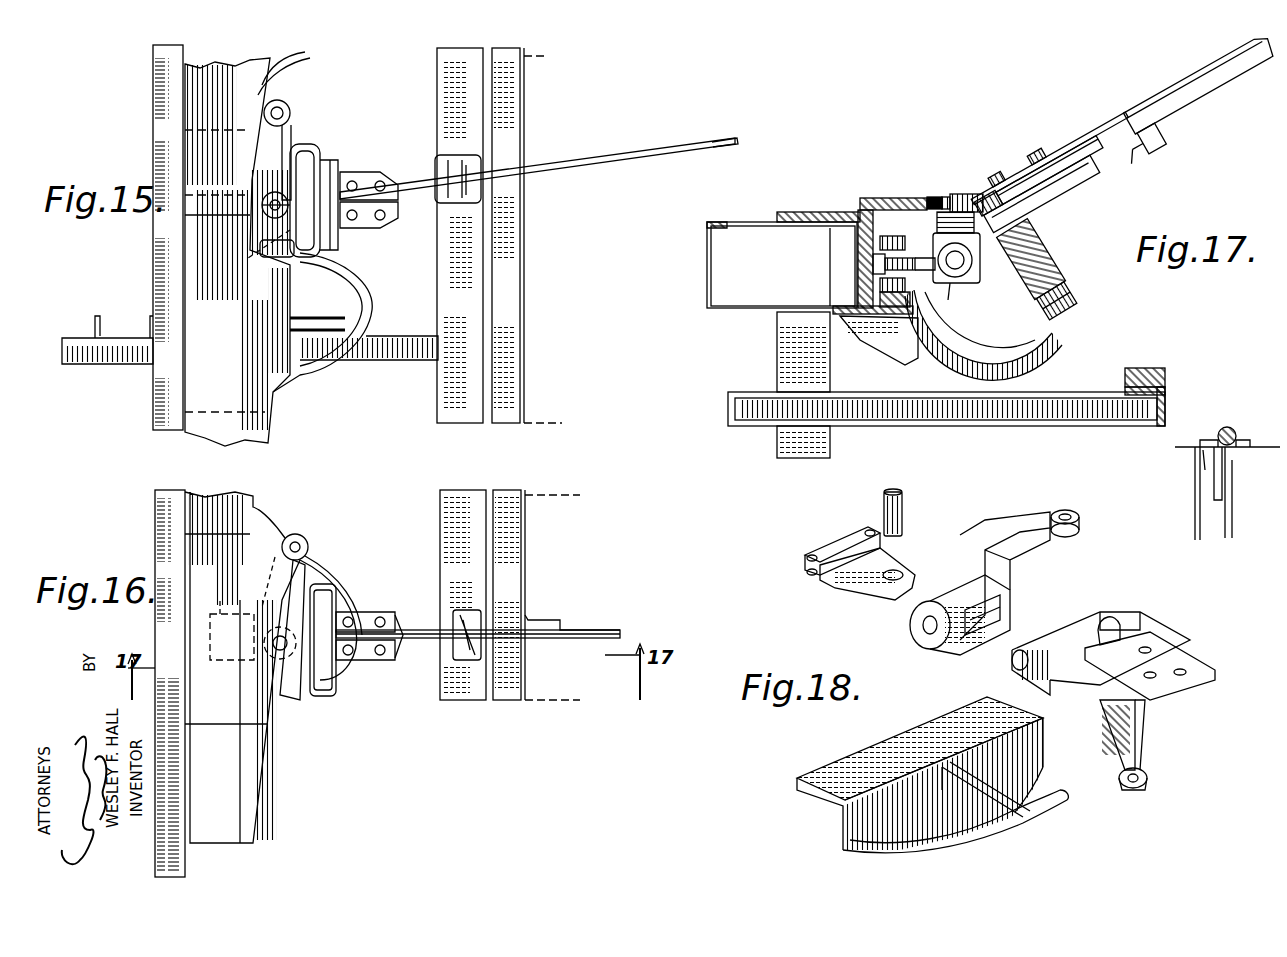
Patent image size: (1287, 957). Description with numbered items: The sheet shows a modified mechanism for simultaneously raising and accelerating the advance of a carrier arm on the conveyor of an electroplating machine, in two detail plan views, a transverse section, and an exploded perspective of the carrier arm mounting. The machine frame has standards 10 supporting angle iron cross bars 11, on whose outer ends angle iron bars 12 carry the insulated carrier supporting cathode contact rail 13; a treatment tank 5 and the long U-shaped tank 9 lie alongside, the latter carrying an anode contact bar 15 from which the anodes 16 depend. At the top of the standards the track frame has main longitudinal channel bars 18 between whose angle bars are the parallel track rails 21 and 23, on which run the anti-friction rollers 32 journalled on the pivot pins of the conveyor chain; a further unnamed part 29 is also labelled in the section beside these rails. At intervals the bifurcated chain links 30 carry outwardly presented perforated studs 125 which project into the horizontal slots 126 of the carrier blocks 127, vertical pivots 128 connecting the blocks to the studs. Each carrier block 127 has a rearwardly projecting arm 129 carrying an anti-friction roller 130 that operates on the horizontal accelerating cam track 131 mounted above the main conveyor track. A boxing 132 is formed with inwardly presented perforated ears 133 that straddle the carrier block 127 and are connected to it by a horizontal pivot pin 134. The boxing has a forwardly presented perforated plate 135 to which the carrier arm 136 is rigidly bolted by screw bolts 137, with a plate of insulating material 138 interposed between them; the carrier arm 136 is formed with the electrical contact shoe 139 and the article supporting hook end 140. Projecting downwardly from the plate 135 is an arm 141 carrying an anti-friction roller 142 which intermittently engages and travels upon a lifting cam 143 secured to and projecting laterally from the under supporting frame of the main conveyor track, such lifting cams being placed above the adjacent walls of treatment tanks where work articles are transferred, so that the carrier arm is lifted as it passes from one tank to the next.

In FIG. 15, the tank 5 is at (524, 239).
In FIG. 16, the tank 5 is at (525, 700).
In FIG. 17, the U-shaped tank 9 is at (1195, 496).
In FIG. 15, the standard 10 is at (99, 320).
In FIG. 17, the standard 10 is at (777, 356).
In FIG. 17, the angle iron cross bar 11 is at (1043, 415).
In FIG. 17, the angle iron bar 12 is at (1165, 391).
In FIG. 15, the cathode contact rail 13 is at (480, 326).
In FIG. 16, the cathode contact rail 13 is at (478, 540).
In FIG. 17, the cathode contact rail 13 is at (1143, 368).
In FIG. 17, the anode contact bar 15 is at (1232, 428).
In FIG. 17, the anode 16 is at (1228, 469).
In FIG. 15, the longitudinal channel bar 18 is at (153, 129).
In FIG. 16, the longitudinal channel bar 18 is at (170, 683).
In FIG. 17, the longitudinal channel bar 18 is at (850, 212).
In FIG. 17, the track rail 21 is at (850, 241).
In FIG. 17, the track rail 23 is at (880, 289).
In FIG. 17, the shaft 29 is at (873, 265).
In FIG. 18, the bifurcated link member 30 is at (843, 545).
In FIG. 17, the anti-friction roller 32 is at (893, 198).
In FIG. 16, the perforated stud 125 is at (229, 622).
In FIG. 17, the perforated stud 125 is at (905, 296).
In FIG. 18, the perforated stud 125 is at (880, 560).
In FIG. 18, the horizontal slot 126 is at (962, 652).
In FIG. 18, the carrier block 127 is at (912, 612).
In FIG. 15, the vertical pivot 128 is at (258, 180).
In FIG. 16, the vertical pivot 128 is at (262, 660).
In FIG. 17, the vertical pivot 128 is at (952, 283).
In FIG. 18, the vertical pivot 128 is at (900, 509).
In FIG. 15, the rearwardly projecting arm 129 is at (291, 133).
In FIG. 16, the rearwardly projecting arm 129 is at (306, 560).
In FIG. 17, the rearwardly projecting arm 129 is at (950, 215).
In FIG. 18, the rearwardly projecting arm 129 is at (1040, 548).
In FIG. 15, the anti-friction roller 130 is at (290, 110).
In FIG. 16, the anti-friction roller 130 is at (308, 540).
In FIG. 17, the anti-friction roller 130 is at (985, 192).
In FIG. 18, the anti-friction roller 130 is at (1052, 512).
In FIG. 15, the accelerating cam track 131 is at (225, 100).
In FIG. 16, the accelerating cam track 131 is at (242, 667).
In FIG. 17, the accelerating cam track 131 is at (936, 197).
In FIG. 15, the boxing 132 is at (318, 157).
In FIG. 16, the boxing 132 is at (323, 640).
In FIG. 18, the boxing 132 is at (1160, 640).
In FIG. 15, the perforated ear 133 is at (326, 256).
In FIG. 18, the perforated ear 133 is at (1098, 624).
In FIG. 17, the horizontal pivot pin 134 is at (958, 264).
In FIG. 17, the perforated plate 135 is at (1036, 208).
In FIG. 18, the perforated plate 135 is at (1215, 683).
In FIG. 15, the carrier arm 136 is at (532, 167).
In FIG. 16, the carrier arm 136 is at (545, 640).
In FIG. 17, the carrier arm 136 is at (1143, 106).
In FIG. 15, the screw bolt 137 is at (372, 220).
In FIG. 16, the screw bolt 137 is at (378, 612).
In FIG. 17, the screw bolt 137 is at (1035, 165).
In FIG. 17, the insulating plate 138 is at (1066, 176).
In FIG. 15, the electrical contact shoe 139 is at (480, 158).
In FIG. 16, the electrical contact shoe 139 is at (480, 615).
In FIG. 17, the electrical contact shoe 139 is at (1150, 152).
In FIG. 15, the hook end 140 is at (722, 140).
In FIG. 17, the arm 141 is at (1036, 262).
In FIG. 18, the arm 141 is at (1140, 737).
In FIG. 15, the anti-friction roller 142 is at (258, 244).
In FIG. 16, the anti-friction roller 142 is at (400, 658).
In FIG. 17, the anti-friction roller 142 is at (1075, 297).
In FIG. 18, the anti-friction roller 142 is at (1124, 789).
In FIG. 15, the lifting cam 143 is at (300, 58).
In FIG. 16, the lifting cam 143 is at (345, 588).
In FIG. 17, the lifting cam 143 is at (1046, 344).
In FIG. 18, the lifting cam 143 is at (1042, 826).